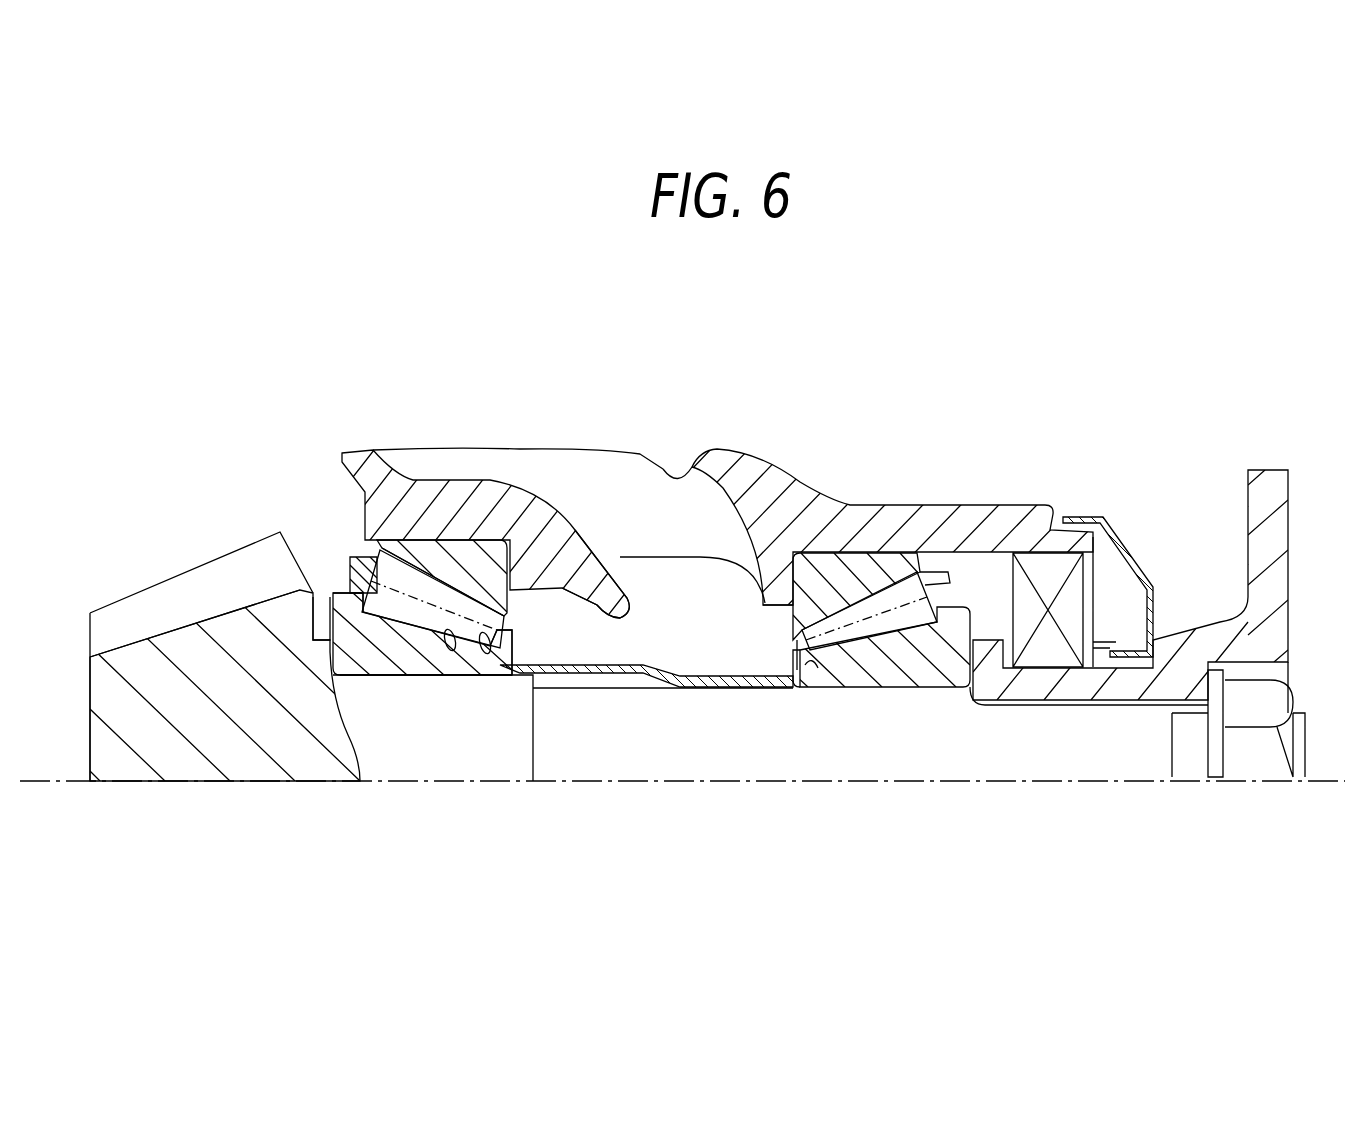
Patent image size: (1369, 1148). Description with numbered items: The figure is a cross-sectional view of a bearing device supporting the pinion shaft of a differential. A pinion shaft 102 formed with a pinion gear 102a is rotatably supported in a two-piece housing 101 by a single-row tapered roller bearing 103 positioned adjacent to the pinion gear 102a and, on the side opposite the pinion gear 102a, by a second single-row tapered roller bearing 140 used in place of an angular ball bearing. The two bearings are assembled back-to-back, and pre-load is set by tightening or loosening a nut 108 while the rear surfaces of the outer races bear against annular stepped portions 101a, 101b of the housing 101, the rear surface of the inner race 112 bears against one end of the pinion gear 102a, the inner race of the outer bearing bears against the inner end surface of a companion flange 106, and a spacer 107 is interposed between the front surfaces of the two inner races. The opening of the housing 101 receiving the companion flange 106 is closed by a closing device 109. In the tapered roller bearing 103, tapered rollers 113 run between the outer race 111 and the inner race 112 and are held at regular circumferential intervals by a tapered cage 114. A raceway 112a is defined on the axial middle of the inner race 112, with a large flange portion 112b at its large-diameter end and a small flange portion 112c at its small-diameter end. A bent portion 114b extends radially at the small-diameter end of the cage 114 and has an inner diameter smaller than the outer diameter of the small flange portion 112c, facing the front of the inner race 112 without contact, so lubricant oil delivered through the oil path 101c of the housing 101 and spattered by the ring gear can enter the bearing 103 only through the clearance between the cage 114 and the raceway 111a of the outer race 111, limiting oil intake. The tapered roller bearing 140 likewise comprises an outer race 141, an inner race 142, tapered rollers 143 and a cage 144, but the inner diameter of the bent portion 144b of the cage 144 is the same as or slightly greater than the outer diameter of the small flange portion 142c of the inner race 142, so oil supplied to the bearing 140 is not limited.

The housing 101 is at (752, 440).
The annular stepped portion 101a is at (530, 585).
The annular stepped portion 101b is at (762, 603).
The oil path 101c is at (668, 460).
The pinion shaft 102 is at (630, 757).
The pinion gear 102a is at (172, 592).
The single-row tapered roller bearing 103 is at (378, 700).
The companion flange 106 is at (1190, 640).
The spacer 107 is at (670, 670).
The nut 108 is at (1268, 703).
The closing device 109 is at (1075, 597).
The outer race 111 is at (458, 537).
The raceway 111a is at (430, 575).
The inner race 112 is at (415, 676).
The raceway 112a is at (447, 678).
The large flange portion 112b is at (330, 593).
The small flange portion 112c is at (478, 678).
The tapered rollers 113 is at (362, 567).
The cage 114 is at (352, 557).
The bent portion 114b is at (505, 655).
The single-row tapered roller bearing 140 is at (838, 538).
The outer race 141 is at (825, 565).
The inner race 142 is at (907, 690).
The small flange portion 142c is at (830, 672).
The tapered rollers 143 is at (897, 615).
The cage 144 is at (933, 572).
The bent portion 144b is at (800, 665).